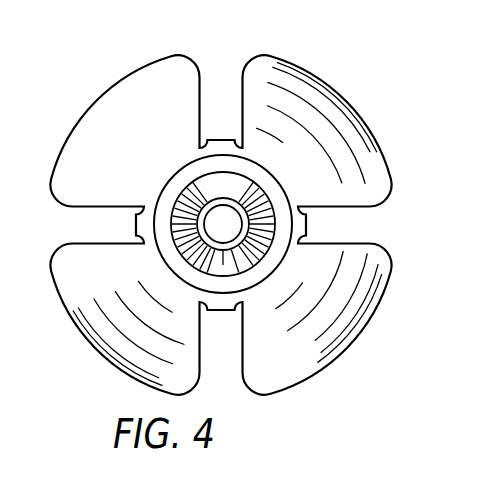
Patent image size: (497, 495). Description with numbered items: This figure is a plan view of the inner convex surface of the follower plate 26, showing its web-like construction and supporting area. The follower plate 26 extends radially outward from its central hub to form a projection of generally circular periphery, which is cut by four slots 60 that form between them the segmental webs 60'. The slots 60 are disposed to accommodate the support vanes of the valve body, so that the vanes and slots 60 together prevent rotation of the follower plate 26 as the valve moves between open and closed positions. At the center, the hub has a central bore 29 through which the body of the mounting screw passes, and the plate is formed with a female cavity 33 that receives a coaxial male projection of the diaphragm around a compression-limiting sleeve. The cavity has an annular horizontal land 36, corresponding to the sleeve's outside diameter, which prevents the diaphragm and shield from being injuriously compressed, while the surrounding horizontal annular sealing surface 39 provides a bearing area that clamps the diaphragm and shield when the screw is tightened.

The follower plate 26 is at (361, 119).
The central bore 29 is at (223, 224).
The female cavity 33 is at (223, 224).
The annular horizontal face or land 36 is at (228, 245).
The horizontal annular sealing surface 39 is at (254, 174).
The slot 60 is at (316, 151).
The segmental web 60' is at (227, 238).